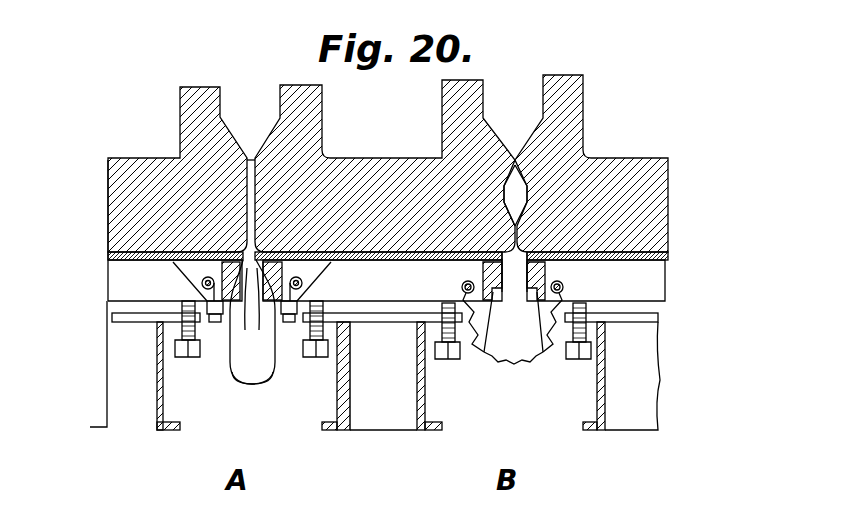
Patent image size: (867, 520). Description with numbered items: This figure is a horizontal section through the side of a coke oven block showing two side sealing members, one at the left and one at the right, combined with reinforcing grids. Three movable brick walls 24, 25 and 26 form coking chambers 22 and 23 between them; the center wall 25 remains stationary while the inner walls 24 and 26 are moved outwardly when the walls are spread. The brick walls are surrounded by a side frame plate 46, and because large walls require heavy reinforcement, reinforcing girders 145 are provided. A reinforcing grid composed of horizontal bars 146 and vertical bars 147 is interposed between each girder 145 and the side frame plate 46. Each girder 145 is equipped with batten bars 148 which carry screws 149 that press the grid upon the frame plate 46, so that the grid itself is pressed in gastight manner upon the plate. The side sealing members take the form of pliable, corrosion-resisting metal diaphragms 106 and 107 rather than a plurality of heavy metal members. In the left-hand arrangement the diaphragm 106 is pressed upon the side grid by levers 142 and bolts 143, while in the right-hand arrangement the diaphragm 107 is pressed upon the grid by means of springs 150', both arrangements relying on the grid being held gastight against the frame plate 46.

The movable wall 26 is at (142, 158).
The center wall 25 is at (322, 118).
The movable wall 24 is at (578, 125).
The coking chamber 23 is at (246, 129).
The coking chamber 22 is at (511, 158).
The horizontal bars 146 is at (398, 262).
The side frame plate 46 is at (382, 283).
The levers 142 is at (180, 275).
The vertical bars 147 is at (582, 282).
The flexible metal diaphragm 106 is at (255, 385).
The bolts 143 is at (216, 324).
The batten bars 148 is at (397, 323).
The reinforcing girders 145 is at (170, 429).
The screws 149 is at (438, 354).
The flexible metal diaphragm 107 is at (504, 364).
The springs 150' is at (520, 345).